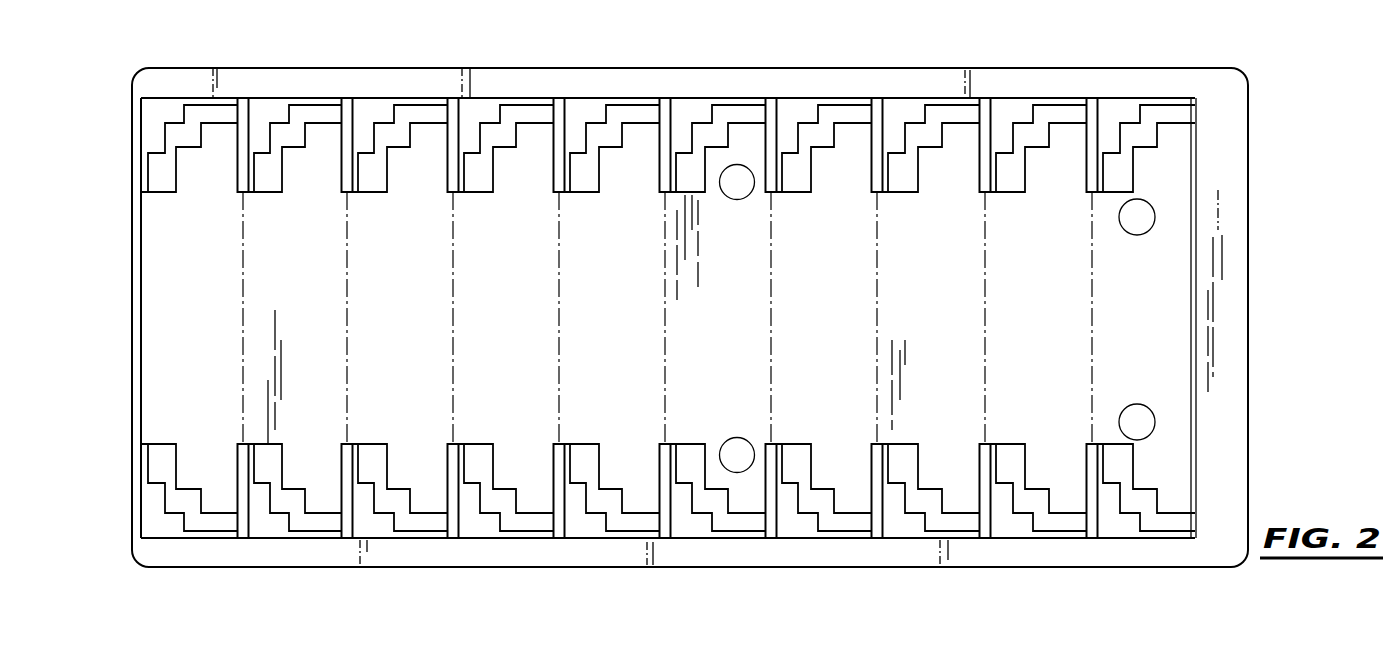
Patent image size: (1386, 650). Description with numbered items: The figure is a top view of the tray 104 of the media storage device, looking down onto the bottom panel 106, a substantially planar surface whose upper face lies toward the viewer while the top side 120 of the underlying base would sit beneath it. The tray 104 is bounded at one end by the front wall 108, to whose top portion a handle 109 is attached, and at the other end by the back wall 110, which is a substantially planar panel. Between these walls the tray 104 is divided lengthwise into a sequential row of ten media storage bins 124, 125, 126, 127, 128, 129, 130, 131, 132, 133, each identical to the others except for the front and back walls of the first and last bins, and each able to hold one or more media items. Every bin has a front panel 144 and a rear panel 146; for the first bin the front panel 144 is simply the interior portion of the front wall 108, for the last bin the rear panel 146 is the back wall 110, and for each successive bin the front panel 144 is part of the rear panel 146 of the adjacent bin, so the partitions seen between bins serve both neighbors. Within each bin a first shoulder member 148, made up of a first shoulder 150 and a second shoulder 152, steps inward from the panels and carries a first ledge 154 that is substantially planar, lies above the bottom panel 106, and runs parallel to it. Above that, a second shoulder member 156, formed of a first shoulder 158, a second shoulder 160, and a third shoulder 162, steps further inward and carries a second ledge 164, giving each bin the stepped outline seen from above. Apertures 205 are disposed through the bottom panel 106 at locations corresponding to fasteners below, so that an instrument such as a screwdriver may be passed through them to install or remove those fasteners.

The tray 104 is at (435, 566).
The bottom panel 106 is at (158, 388).
The front wall 108 is at (1190, 328).
The handle 109 is at (1240, 362).
The back wall 110 is at (134, 347).
The top side 120 is at (163, 238).
The media storage bin 124 is at (1178, 483).
The media storage bin 125 is at (1000, 353).
The media storage bin 126 is at (933, 433).
The media storage bin 127 is at (833, 453).
The media storage bin 128 is at (703, 417).
The media storage bin 129 is at (637, 473).
The media storage bin 130 is at (533, 487).
The media storage bin 131 is at (420, 468).
The media storage bin 132 is at (315, 480).
The media storage bin 133 is at (210, 490).
The front panel 144 is at (1197, 233).
The rear panel 146 is at (1098, 133).
The first shoulder member 148 is at (1028, 135).
The first shoulder 150 is at (1063, 135).
The second shoulder 152 is at (1027, 172).
The first ledge 154 is at (1012, 182).
The second shoulder member 156 is at (580, 110).
The first shoulder 158 is at (613, 113).
The second shoulder 160 is at (593, 132).
The third shoulder 162 is at (575, 180).
The second ledge 164 is at (582, 162).
The aperture 205 is at (737, 172).